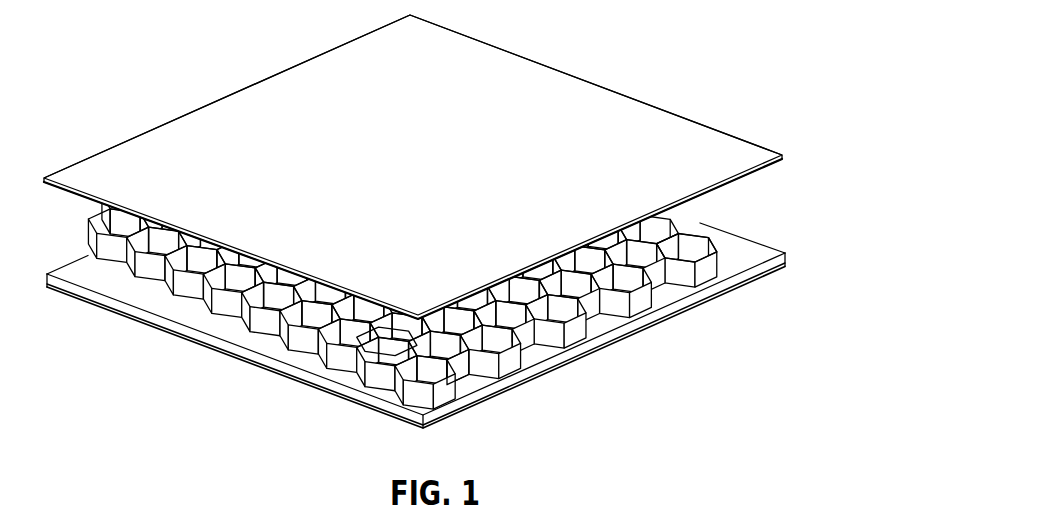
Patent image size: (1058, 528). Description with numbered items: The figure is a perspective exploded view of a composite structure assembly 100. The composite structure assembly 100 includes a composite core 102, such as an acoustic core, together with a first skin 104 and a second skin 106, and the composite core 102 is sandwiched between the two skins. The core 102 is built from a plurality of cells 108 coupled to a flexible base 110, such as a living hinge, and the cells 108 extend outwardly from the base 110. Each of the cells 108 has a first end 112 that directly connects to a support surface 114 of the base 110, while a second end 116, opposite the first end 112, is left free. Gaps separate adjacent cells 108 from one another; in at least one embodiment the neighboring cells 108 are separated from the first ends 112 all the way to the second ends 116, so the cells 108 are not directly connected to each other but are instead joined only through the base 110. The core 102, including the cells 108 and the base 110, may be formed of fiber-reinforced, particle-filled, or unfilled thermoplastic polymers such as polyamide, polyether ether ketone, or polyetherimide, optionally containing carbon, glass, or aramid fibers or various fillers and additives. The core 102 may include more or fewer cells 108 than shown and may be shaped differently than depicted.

The composite structure assembly 100 is at (502, 244).
The composite core 102 is at (465, 310).
The first skin 104 is at (439, 348).
The second skin 106 is at (628, 113).
The cells 108 is at (374, 372).
The flexible base 110 is at (677, 300).
The first ends 112 is at (396, 414).
The support surface 114 is at (467, 382).
The second ends 116 is at (512, 333).